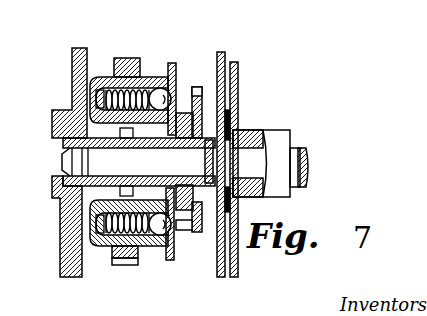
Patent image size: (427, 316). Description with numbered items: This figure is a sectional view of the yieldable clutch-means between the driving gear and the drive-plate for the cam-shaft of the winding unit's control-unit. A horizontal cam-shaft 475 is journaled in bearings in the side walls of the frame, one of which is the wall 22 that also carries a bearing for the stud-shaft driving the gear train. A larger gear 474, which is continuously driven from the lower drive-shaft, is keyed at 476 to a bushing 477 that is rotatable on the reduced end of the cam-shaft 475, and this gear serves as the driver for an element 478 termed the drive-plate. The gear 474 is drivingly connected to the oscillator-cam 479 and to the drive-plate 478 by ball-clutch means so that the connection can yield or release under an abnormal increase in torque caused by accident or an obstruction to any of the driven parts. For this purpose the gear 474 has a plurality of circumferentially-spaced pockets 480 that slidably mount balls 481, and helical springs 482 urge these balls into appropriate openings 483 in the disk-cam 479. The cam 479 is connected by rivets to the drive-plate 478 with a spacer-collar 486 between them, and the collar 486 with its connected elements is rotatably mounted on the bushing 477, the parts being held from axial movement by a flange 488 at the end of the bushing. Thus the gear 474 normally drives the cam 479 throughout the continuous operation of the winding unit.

The wall 22 is at (60, 253).
The gear 474 is at (125, 265).
The cam-shaft 475 is at (308, 163).
The key 476 is at (138, 148).
The bushing 477 is at (183, 148).
The drive-plate 478 is at (218, 130).
The oscillator-cam 479 is at (163, 88).
The pockets 480 is at (156, 77).
The balls 481 is at (148, 88).
The helical springs 482 is at (102, 76).
The openings 483 is at (175, 100).
The spacer-collar 486 is at (194, 105).
The flange 488 is at (235, 108).